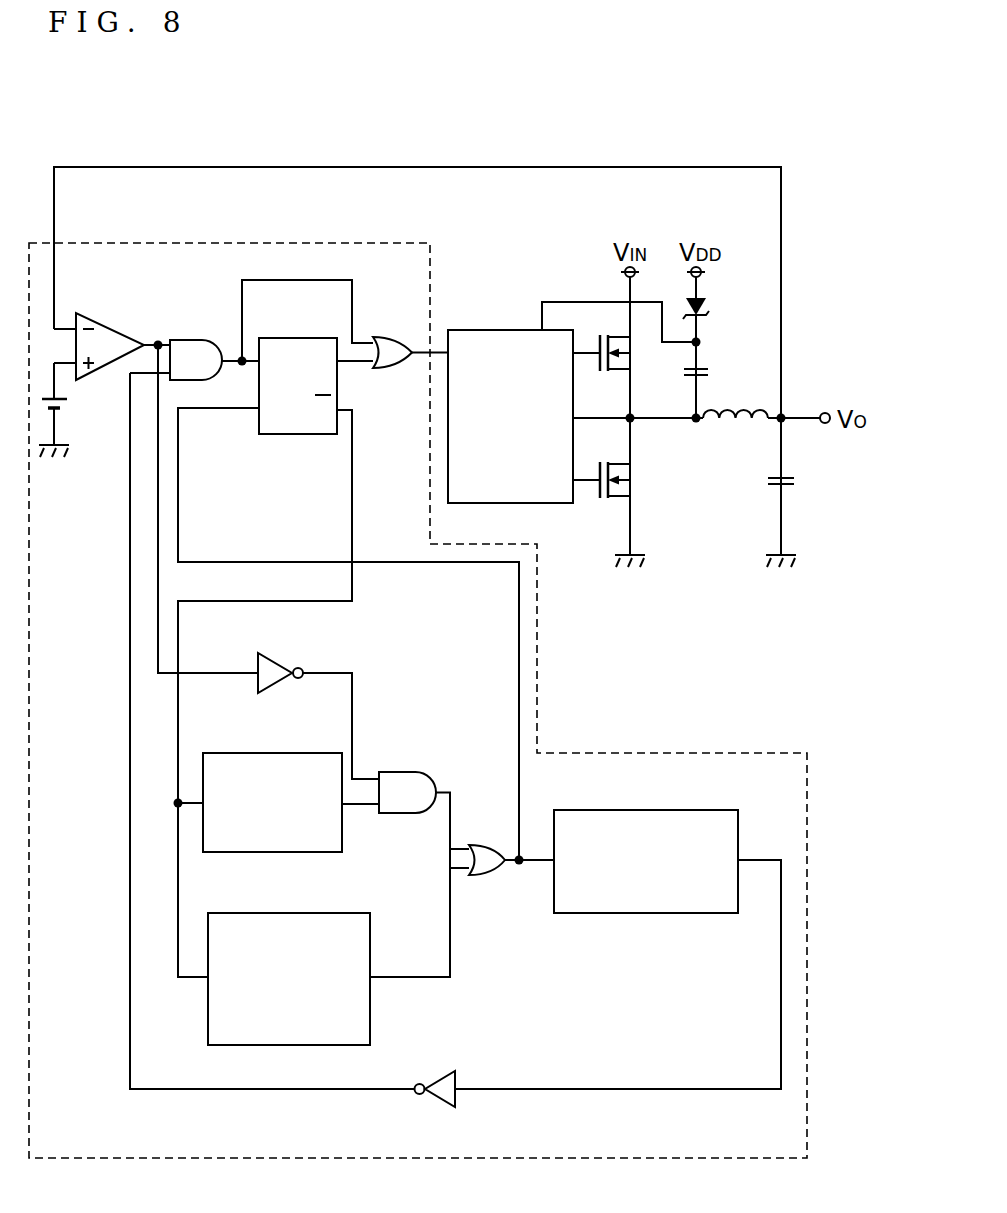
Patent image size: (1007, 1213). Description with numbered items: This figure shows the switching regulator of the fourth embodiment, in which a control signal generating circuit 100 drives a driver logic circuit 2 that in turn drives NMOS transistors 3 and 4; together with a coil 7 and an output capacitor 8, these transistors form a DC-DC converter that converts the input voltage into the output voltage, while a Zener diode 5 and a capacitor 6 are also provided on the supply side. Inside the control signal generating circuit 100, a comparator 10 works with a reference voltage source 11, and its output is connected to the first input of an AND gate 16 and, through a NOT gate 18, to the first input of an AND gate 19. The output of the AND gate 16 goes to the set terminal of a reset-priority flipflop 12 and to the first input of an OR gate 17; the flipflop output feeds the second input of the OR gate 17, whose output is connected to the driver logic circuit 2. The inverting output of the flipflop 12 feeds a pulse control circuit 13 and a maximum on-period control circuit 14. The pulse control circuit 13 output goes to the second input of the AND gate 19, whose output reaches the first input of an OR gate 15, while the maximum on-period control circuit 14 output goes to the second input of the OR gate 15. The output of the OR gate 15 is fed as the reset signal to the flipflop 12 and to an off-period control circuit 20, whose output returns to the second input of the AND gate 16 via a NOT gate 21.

The control signal generating circuit 100 is at (258, 242).
The comparator 10 is at (122, 324).
The reference voltage source 11 is at (70, 414).
The AND gate 16 is at (192, 339).
The flipflop 12 is at (295, 337).
The OR gate 17 is at (388, 336).
The driver logic circuit 2 is at (506, 329).
The NMOS transistor 3 is at (640, 368).
The NMOS transistor 4 is at (640, 493).
The Zener diode 5 is at (712, 304).
The capacitor 6 is at (714, 367).
The coil 7 is at (735, 432).
The output capacitor 8 is at (800, 479).
The NOT gate 18 is at (274, 653).
The pulse control circuit 13 is at (274, 752).
The AND gate 19 is at (397, 771).
The OR gate 15 is at (481, 844).
The off-period control circuit 20 is at (644, 809).
The maximum on-period control circuit 14 is at (287, 912).
The NOT gate 21 is at (441, 1108).